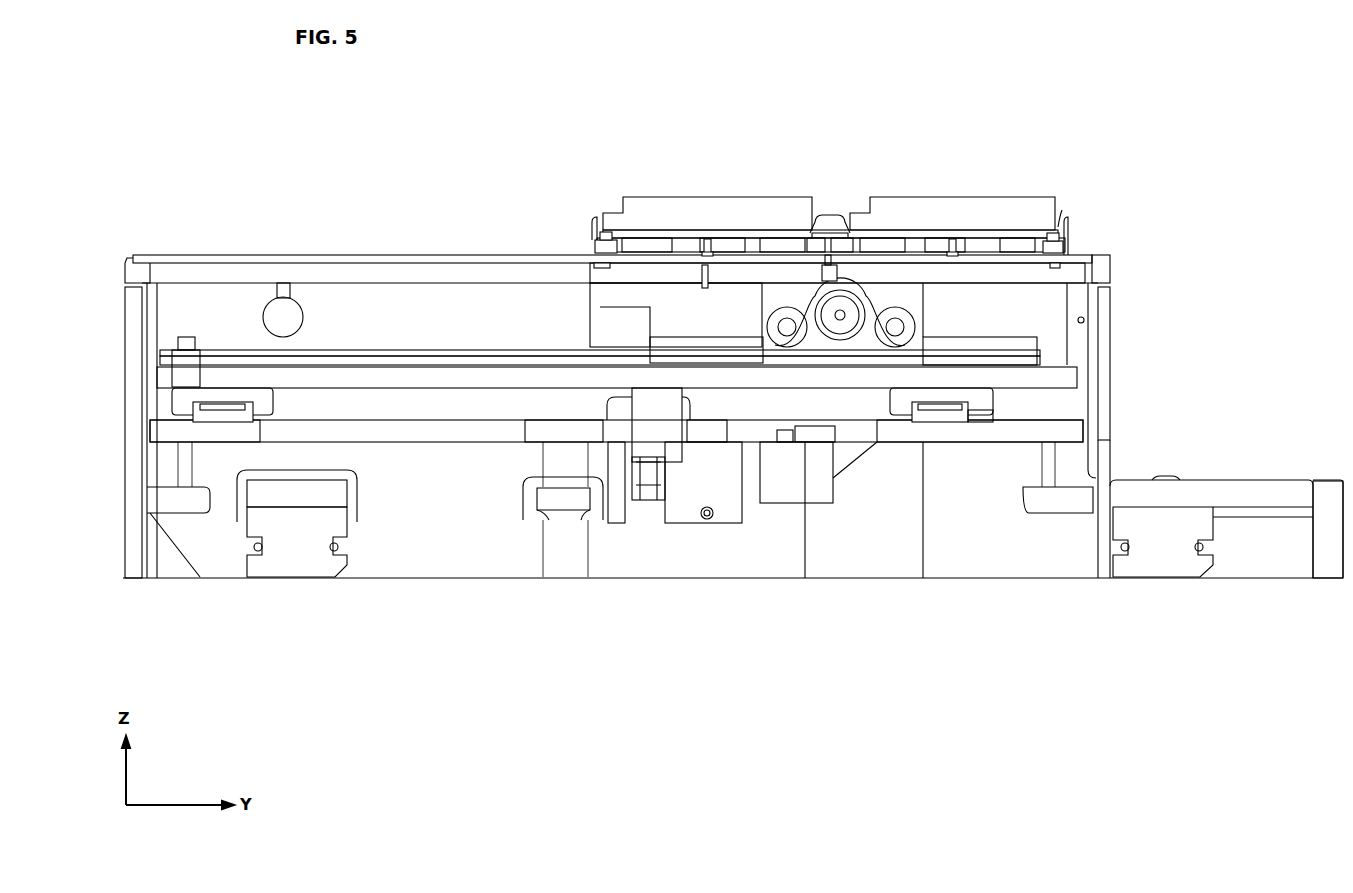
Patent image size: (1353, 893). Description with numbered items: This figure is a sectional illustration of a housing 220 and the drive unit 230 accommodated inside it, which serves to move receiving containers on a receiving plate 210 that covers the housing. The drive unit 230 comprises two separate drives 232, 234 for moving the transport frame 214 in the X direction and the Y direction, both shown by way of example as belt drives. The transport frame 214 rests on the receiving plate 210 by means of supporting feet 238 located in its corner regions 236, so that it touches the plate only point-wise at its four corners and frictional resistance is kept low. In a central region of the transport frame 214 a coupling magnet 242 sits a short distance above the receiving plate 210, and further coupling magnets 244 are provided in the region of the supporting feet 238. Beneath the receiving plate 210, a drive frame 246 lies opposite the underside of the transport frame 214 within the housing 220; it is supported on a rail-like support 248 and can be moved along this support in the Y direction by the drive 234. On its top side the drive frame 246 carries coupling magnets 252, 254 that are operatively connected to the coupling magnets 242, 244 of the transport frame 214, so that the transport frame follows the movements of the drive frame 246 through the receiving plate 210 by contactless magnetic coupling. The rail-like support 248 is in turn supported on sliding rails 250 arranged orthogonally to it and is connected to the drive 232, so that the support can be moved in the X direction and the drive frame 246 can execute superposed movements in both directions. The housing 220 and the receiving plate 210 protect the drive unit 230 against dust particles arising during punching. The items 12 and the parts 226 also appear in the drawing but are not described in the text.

The substrate 12 is at (700, 208).
The receiving plate 210 is at (443, 256).
The transport frame 214 is at (800, 236).
The housing 220 is at (134, 367).
The end cap 226 is at (137, 272).
The drive unit 230 is at (977, 492).
The drive 232 is at (681, 500).
The drive 234 is at (920, 323).
The corner regions 236 is at (569, 191).
The supporting feet 238 is at (603, 245).
The coupling magnet 242 is at (828, 238).
The coupling magnets 244 is at (1135, 235).
The drive frame 246 is at (913, 275).
The rail-like support 248 is at (492, 376).
The sliding rails 250 is at (218, 412).
The coupling magnets 252 is at (828, 272).
The coupling magnets 254 is at (592, 272).